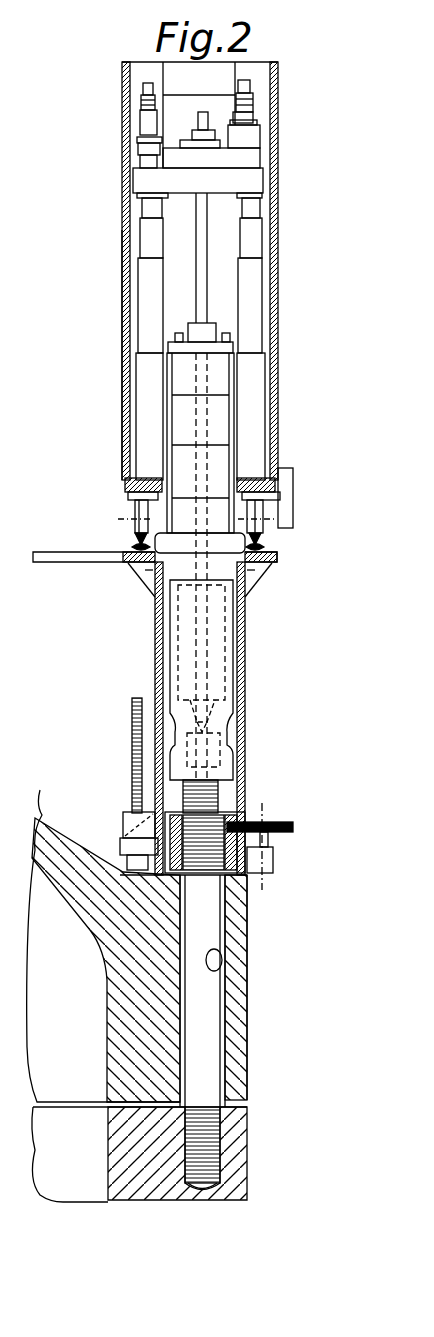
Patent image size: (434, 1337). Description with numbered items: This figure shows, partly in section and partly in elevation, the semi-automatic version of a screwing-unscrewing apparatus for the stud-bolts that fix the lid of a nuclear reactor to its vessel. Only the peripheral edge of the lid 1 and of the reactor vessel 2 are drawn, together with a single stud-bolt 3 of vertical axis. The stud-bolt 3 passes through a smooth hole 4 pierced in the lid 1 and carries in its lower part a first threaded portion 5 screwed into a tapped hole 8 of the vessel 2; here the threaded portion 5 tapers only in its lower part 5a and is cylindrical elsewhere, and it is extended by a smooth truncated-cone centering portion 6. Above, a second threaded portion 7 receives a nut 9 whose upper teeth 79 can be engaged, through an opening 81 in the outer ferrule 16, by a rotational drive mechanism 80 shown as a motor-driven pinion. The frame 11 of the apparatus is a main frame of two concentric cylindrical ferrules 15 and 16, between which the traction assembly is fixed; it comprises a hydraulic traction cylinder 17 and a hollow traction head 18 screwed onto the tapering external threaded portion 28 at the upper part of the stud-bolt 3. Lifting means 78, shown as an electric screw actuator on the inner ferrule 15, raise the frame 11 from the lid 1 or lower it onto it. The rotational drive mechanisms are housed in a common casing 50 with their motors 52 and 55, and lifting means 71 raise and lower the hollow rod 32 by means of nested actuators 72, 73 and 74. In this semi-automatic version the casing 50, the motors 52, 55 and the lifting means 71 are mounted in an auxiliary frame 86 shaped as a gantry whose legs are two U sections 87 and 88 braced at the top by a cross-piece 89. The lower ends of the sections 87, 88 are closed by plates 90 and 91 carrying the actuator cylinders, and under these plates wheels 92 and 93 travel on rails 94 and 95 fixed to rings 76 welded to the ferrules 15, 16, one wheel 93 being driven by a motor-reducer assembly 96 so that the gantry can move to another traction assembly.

The lid 1 is at (45, 815).
The reactor vessel 2 is at (247, 1158).
The stud-bolt 3 is at (212, 1024).
The smooth hole 4 is at (220, 968).
The first threaded portion 5 is at (222, 1140).
The lower part of threaded portion 5a is at (215, 1181).
The centering portion 6 is at (208, 1196).
The second threaded portion 7 is at (204, 874).
The tapped hole 8 is at (185, 1150).
The nut 9 is at (265, 885).
The frame 11 is at (67, 546).
The inner ferrule 15 is at (155, 652).
The outer ferrule 16 is at (247, 655).
The hydraulic traction cylinder 17 is at (215, 432).
The traction head 18 is at (234, 730).
The external threaded portion 28 is at (218, 795).
The hollow rod 32 is at (198, 248).
The common casing 50 is at (238, 184).
The drive motor 52 is at (140, 114).
The motor 55 is at (255, 105).
The lifting means 71 is at (238, 282).
The actuator 72 is at (148, 395).
The actuator 73 is at (140, 328).
The actuator 74 is at (140, 237).
The ring 76 is at (150, 565).
The lifting means 78 is at (119, 830).
The teeth 79 is at (263, 806).
The rotational drive mechanism 80 is at (278, 856).
The opening 81 is at (293, 826).
The auxiliary frame 86 is at (121, 370).
The U section 87 is at (122, 192).
The U section 88 is at (278, 200).
The cross-piece 89 is at (182, 66).
The plate 90 is at (124, 485).
The plate 91 is at (278, 481).
The wheel 92 is at (135, 528).
The wheel 93 is at (265, 537).
The rail 94 is at (140, 540).
The rail 95 is at (262, 545).
The motor-reducer assembly 96 is at (293, 500).